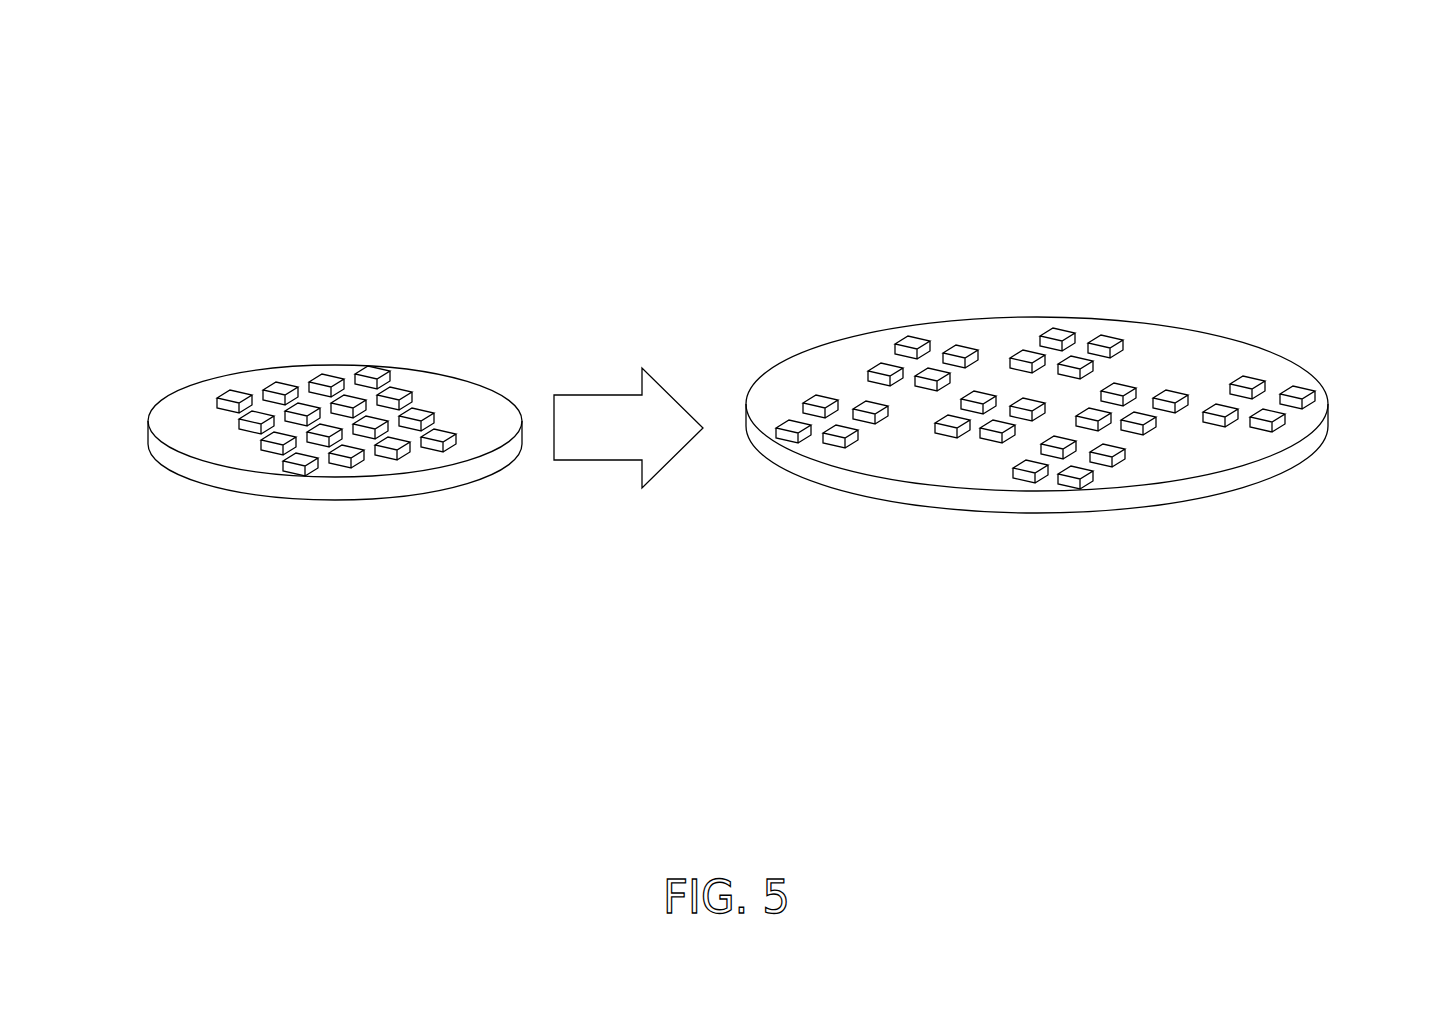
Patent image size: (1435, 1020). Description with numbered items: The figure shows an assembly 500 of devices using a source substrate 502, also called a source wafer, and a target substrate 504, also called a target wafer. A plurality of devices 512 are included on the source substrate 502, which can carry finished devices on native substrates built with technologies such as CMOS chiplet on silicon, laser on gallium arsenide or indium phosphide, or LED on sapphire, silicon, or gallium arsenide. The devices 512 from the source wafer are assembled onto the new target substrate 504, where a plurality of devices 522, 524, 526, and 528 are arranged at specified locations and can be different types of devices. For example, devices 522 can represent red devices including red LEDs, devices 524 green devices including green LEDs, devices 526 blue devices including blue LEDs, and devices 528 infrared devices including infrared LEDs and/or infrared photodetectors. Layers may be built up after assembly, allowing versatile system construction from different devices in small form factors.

The assembly 500 is at (769, 450).
The source substrate 502 is at (325, 373).
The target substrate 504 is at (1055, 250).
The devices 512 is at (263, 447).
The devices 522 is at (1025, 352).
The devices 524 is at (980, 393).
The devices 526 is at (955, 346).
The devices 528 is at (915, 387).